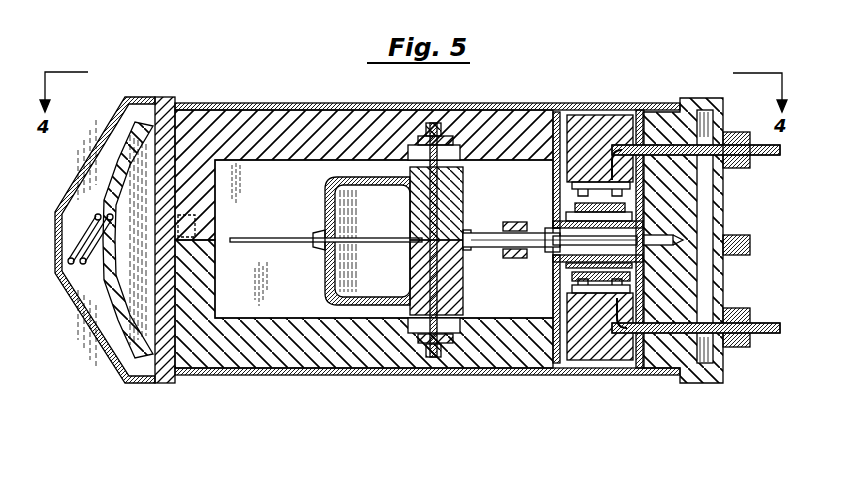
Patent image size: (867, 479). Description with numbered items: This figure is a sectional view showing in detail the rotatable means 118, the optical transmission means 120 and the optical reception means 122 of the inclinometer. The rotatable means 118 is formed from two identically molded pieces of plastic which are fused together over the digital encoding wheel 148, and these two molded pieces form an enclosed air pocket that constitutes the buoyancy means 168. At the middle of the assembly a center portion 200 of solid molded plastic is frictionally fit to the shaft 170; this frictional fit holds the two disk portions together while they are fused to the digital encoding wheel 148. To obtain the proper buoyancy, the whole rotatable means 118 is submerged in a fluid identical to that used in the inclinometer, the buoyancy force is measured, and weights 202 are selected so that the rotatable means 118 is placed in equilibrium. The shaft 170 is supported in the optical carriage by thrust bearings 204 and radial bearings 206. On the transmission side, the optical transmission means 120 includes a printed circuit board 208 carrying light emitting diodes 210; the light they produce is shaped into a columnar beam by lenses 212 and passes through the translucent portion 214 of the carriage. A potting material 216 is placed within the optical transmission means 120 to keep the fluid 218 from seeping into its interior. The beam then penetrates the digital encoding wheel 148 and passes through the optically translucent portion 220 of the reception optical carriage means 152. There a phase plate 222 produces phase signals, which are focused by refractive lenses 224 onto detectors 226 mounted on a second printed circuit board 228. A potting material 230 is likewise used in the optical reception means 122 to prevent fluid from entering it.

The rotatable means 118 is at (307, 307).
The optical transmission means 120 is at (622, 95).
The optical reception means 122 is at (573, 380).
The digital encoding wheel 148 is at (257, 243).
The reception optical carriage means 152 is at (322, 353).
The buoyancy means 168 is at (388, 222).
The shaft 170 is at (438, 270).
The center portion 200 is at (453, 184).
The weights 202 is at (503, 227).
The thrust bearings 204 is at (438, 127).
The radial bearings 206 is at (413, 143).
The printed circuit board 208 is at (630, 185).
The light emitting diodes 210 is at (633, 208).
The lenses 212 is at (627, 220).
The translucent portion 214 is at (550, 230).
The potting material 216 is at (583, 120).
The fluid 218 is at (294, 191).
The optically translucent portion 220 is at (637, 250).
The phase plate 222 is at (640, 273).
The refractive lenses 224 is at (572, 277).
The detectors 226 is at (575, 290).
The printed circuit board 228 is at (610, 367).
The potting material 230 is at (593, 347).